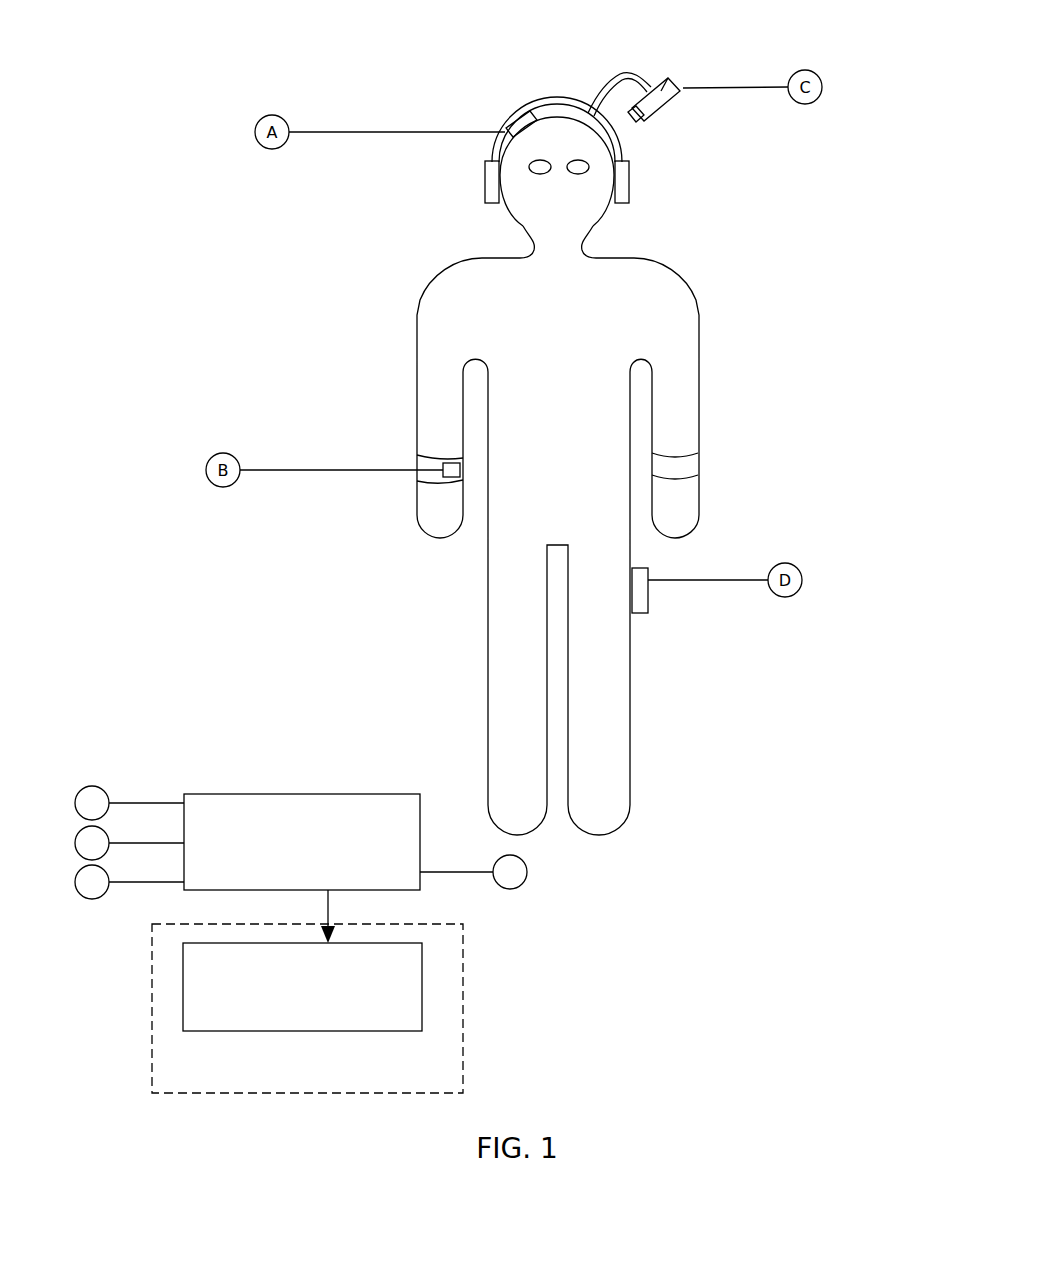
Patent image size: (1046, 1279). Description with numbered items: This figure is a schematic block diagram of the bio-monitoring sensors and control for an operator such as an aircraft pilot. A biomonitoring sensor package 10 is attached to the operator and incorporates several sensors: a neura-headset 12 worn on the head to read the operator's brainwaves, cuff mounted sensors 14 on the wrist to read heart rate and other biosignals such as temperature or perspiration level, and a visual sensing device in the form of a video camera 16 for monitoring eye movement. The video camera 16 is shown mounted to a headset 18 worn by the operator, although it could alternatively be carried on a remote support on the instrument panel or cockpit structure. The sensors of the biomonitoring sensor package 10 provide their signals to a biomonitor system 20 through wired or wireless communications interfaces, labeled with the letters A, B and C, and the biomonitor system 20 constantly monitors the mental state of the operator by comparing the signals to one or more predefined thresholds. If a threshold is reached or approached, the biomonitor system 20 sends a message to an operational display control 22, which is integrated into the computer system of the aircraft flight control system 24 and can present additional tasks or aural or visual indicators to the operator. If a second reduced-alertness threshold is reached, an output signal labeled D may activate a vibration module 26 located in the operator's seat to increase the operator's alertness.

The biomonitoring sensor package 10 is at (343, 214).
The neura-headset 12 is at (513, 120).
The cuff mounted sensors 14 is at (443, 463).
The video camera 16 is at (663, 78).
The headset 18 is at (629, 185).
The biomonitor system 20 is at (323, 794).
The operational display control 22 is at (422, 972).
The aircraft flight control system 24 is at (463, 1045).
The vibration module 26 is at (648, 607).